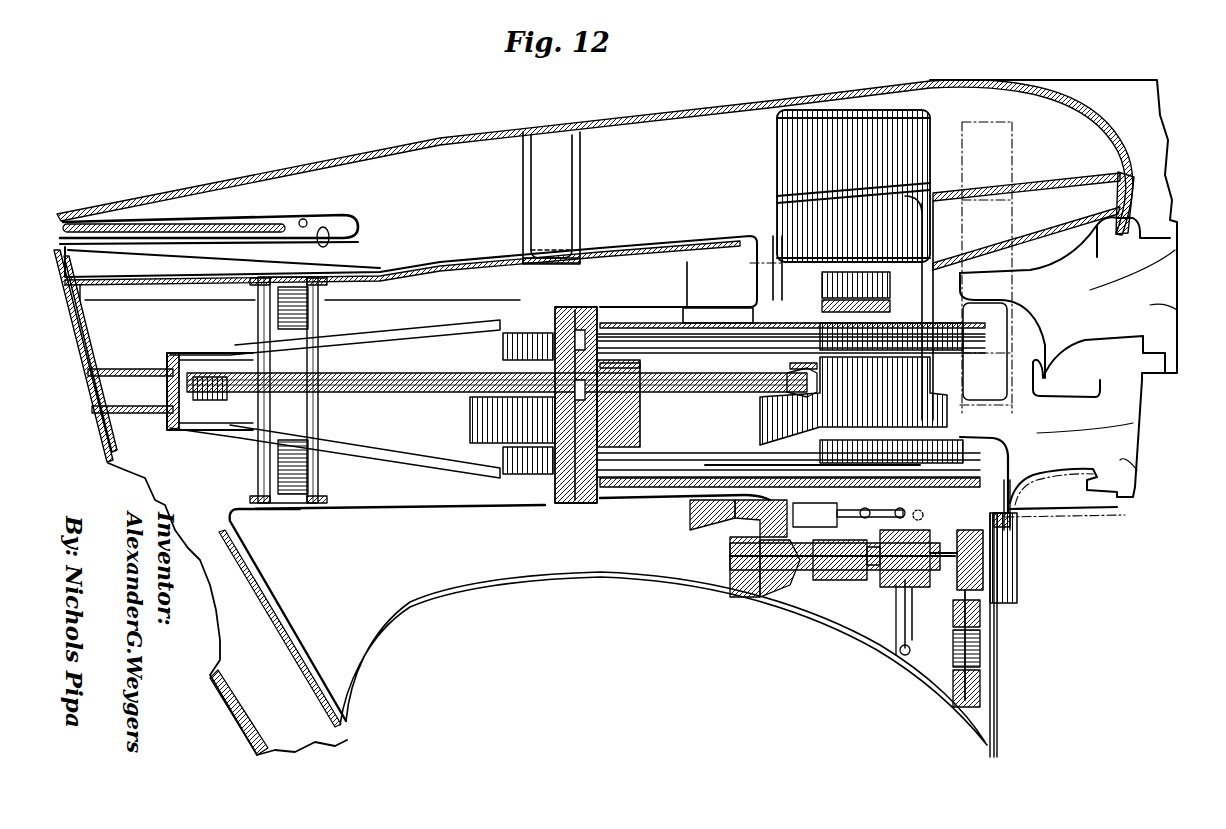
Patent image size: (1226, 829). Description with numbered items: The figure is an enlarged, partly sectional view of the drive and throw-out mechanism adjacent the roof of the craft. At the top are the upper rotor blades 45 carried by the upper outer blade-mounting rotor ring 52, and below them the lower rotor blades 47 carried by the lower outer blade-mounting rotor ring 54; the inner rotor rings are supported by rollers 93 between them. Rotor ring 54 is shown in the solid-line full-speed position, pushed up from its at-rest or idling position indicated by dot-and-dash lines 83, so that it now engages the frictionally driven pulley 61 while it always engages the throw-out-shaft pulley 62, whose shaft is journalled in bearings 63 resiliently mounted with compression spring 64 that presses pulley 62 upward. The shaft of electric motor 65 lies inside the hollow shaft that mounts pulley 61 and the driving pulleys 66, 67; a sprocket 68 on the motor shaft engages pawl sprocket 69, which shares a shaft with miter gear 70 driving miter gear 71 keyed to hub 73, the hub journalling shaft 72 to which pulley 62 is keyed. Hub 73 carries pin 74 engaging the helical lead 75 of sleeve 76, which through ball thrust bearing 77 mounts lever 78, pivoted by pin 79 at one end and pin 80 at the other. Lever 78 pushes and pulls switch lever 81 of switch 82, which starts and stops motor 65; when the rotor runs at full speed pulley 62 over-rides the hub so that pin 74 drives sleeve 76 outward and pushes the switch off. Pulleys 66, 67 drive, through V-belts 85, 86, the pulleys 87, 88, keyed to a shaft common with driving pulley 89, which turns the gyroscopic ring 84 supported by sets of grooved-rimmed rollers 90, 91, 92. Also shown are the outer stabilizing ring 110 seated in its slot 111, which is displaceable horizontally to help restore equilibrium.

The upper rotor blades 45 is at (1170, 318).
The lower rotor blades 47 is at (1130, 475).
The upper outer blade-mounting rotor ring 52 is at (1180, 262).
The lower outer blade-mounting rotor ring 54 is at (1140, 425).
The frictionally driven pulley 61 is at (760, 422).
The throw-out-shaft pulley 62 is at (990, 552).
The bearings 63 is at (985, 610).
The compression spring 64 is at (985, 655).
The electric motor 65 is at (823, 135).
The driving pulley 66 is at (740, 330).
The driving pulley 67 is at (760, 447).
The sprocket 68 is at (892, 590).
The pawl sprocket 69 is at (690, 510).
The miter gear 70 is at (730, 528).
The miter gear 71 is at (775, 595).
The shaft 72 is at (815, 575).
The hub 73 is at (792, 595).
The pin 74 is at (840, 582).
The helical lead 75 is at (872, 585).
The sleeve 76 is at (908, 590).
The ball thrust bearing 77 is at (930, 590).
The lever 78 is at (1005, 525).
The pin 79 is at (903, 660).
The pin 80 is at (895, 660).
The switch lever 81 is at (837, 523).
The switch 82 is at (793, 515).
The dot-and-dash lines 83 is at (1095, 522).
The gyroscopic ring 84 is at (258, 425).
The V-belt 85 is at (628, 335).
The V-belt 86 is at (672, 456).
The pulley 87 is at (500, 340).
The pulley 88 is at (510, 470).
The driving pulley 89 is at (433, 395).
The grooved-rimmed roller 90 is at (212, 377).
The grooved-rimmed roller 91 is at (310, 308).
The grooved-rimmed roller 92 is at (282, 470).
The rollers 93 is at (372, 340).
The outer stabilizing ring 110 is at (232, 226).
The slot 111 is at (343, 240).